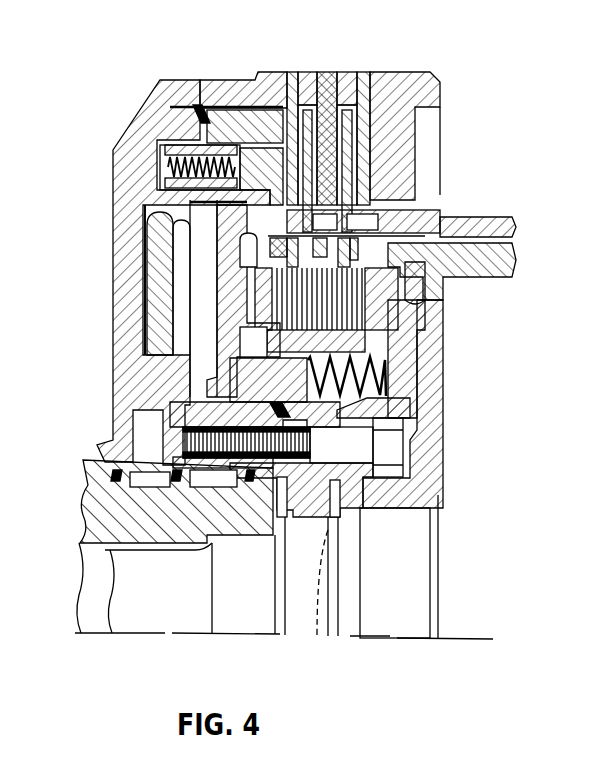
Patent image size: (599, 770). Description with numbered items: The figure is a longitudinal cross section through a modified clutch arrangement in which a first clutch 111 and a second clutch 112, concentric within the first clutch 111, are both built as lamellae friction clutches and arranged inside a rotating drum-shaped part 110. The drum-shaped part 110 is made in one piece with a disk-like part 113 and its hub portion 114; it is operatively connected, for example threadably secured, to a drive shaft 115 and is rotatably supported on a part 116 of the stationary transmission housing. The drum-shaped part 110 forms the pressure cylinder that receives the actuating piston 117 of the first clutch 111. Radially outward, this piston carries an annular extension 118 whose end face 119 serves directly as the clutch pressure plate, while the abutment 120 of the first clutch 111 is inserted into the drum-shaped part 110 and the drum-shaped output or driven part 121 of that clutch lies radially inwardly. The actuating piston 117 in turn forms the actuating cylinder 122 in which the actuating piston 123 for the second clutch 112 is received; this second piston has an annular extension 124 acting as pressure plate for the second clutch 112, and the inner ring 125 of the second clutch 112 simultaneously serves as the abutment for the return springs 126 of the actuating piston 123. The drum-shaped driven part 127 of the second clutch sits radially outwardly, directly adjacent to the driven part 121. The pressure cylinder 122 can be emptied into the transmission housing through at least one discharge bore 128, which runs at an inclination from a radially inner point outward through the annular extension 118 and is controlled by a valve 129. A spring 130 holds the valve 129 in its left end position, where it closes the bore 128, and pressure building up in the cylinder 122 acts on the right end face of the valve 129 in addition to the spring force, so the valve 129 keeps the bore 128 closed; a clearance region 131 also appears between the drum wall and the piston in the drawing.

The drum-shaped part 110 is at (273, 76).
The first clutch 111 is at (376, 52).
The second clutch 112 is at (372, 248).
The disk-like part 113 is at (150, 186).
The hub portion 114 is at (210, 465).
The drive shaft 115 is at (340, 512).
The part of the stationary transmission housing 116 is at (118, 520).
The actuating piston 117 is at (160, 285).
The annular extension 118 is at (260, 118).
The end face 119 is at (286, 117).
The abutment 120 is at (400, 143).
The driven part 121 is at (490, 225).
The actuating cylinder 122 is at (198, 260).
The actuating piston 123 is at (227, 358).
The annular extension 124 is at (247, 262).
The inner ring 125 is at (402, 347).
The return springs 126 is at (365, 388).
The drum-shaped driven part 127 is at (447, 294).
The discharge bore 128 is at (222, 110).
The valve 129 is at (172, 128).
The spring 130 is at (167, 164).
The clearance gap 131 is at (150, 310).